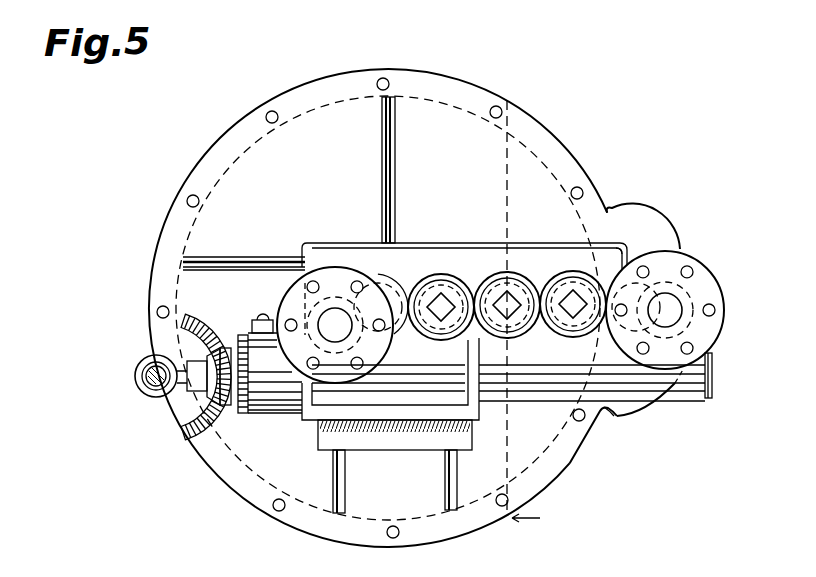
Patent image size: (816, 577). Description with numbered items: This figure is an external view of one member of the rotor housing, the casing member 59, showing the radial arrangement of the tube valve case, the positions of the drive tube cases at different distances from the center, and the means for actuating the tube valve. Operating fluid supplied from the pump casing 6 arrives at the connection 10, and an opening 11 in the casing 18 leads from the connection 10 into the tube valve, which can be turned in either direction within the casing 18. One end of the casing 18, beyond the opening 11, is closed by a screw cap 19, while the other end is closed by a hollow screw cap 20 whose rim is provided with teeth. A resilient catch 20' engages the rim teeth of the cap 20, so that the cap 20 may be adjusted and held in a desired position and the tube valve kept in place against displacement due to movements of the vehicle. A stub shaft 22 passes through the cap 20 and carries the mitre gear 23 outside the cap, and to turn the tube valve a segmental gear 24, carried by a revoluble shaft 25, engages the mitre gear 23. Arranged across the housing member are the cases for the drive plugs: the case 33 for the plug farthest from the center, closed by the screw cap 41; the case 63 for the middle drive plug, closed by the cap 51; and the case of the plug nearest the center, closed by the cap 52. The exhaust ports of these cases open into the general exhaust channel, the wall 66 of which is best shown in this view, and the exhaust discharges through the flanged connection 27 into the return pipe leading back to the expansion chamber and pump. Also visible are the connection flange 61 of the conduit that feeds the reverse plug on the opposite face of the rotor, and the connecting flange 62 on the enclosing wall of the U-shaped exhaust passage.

The pump casing 6 is at (528, 303).
The connection 10 is at (718, 322).
The opening 11 is at (670, 303).
The casing 18 is at (677, 408).
The screw cap 19 is at (713, 387).
The hollow screw cap 20 is at (270, 396).
The resilient catch 20' is at (239, 314).
The stub shaft 22 is at (178, 400).
The mitre gear 23 is at (217, 427).
The segmental gear 24 is at (165, 352).
The revoluble shaft 25 is at (137, 390).
The flange 27 is at (337, 268).
The case 33 is at (582, 275).
The screw cap 41 is at (570, 338).
The cap 51 is at (497, 338).
The cap 52 is at (427, 337).
The casing member 59 is at (565, 457).
The connection flange 61 is at (622, 410).
The connecting flange 62 is at (658, 240).
The case 63 is at (515, 274).
The wall 66 is at (483, 243).